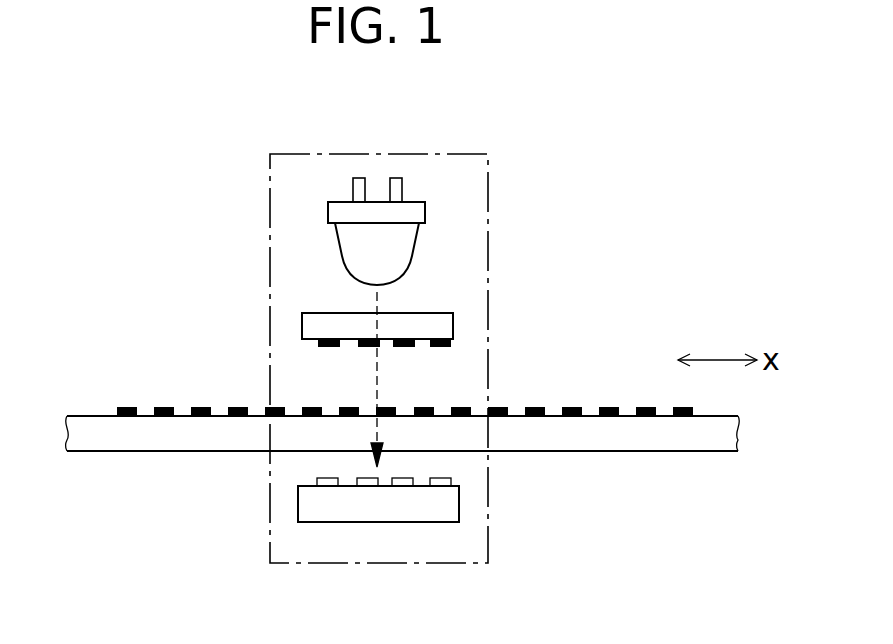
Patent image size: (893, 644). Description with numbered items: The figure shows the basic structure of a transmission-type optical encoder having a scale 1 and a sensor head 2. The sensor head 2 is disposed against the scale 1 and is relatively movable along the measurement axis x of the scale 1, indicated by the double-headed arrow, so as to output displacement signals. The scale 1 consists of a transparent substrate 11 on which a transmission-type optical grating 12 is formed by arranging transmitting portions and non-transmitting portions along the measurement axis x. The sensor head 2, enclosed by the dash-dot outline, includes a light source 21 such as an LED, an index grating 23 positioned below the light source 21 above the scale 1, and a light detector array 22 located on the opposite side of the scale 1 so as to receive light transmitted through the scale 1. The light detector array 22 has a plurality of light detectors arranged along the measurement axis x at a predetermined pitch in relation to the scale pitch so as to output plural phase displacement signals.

The scale 1 is at (648, 432).
The transparent substrate 11 is at (536, 443).
The transmission-type optical grating 12 is at (527, 407).
The sensor head 2 is at (270, 306).
The light source 21 is at (403, 258).
The light detector array 22 is at (385, 525).
The index grating 23 is at (322, 312).